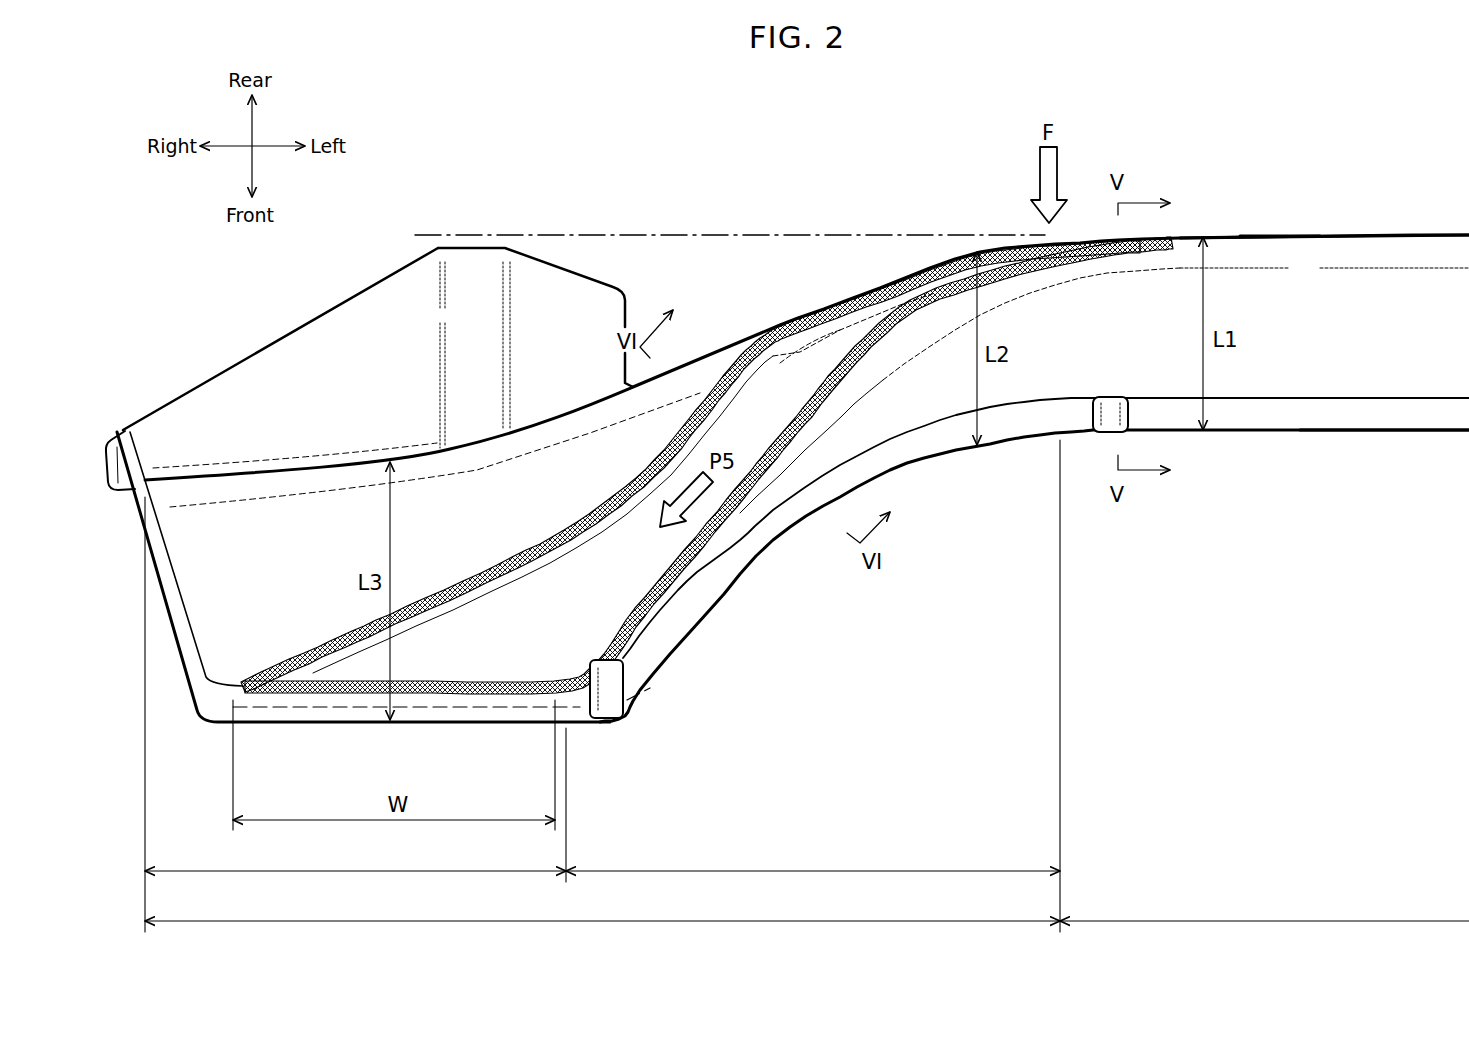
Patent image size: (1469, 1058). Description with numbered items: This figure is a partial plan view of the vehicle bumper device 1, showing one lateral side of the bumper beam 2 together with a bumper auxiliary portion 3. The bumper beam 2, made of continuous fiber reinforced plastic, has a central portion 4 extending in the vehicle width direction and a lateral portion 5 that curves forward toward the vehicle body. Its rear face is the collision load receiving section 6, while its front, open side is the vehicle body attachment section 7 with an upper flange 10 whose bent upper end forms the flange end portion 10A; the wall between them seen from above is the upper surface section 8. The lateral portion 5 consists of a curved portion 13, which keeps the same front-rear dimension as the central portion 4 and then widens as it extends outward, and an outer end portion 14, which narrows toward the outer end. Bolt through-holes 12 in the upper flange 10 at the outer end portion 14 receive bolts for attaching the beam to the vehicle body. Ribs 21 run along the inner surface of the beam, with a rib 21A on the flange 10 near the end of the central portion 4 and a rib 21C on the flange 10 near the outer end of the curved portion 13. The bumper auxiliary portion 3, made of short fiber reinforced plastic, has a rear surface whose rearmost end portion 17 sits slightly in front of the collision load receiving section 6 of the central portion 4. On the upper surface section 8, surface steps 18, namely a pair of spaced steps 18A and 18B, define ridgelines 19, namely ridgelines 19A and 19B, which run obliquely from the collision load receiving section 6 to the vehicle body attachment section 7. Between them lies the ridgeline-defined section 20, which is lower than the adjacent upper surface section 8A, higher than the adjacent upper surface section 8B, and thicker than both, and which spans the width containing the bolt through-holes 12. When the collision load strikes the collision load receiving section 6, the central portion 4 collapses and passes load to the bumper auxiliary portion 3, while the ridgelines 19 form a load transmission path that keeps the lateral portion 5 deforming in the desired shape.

The vehicle bumper device 1 is at (796, 190).
The bumper beam 2 is at (1330, 215).
The bumper auxiliary portion 3 is at (205, 355).
The central portion 4 is at (1264, 907).
The lateral portion 5 is at (602, 907).
The collision load receiving section 6 is at (1280, 232).
The vehicle body attachment section 7 is at (1235, 447).
The upper surface section 8 is at (1290, 337).
The upper surface section 8A is at (895, 410).
The upper surface section 8B is at (622, 462).
The flange 10 is at (1398, 433).
The flange end portion 10A is at (1343, 413).
The bolt through-hole 12 is at (350, 713).
The curved portion 13 is at (813, 858).
The outer end portion 14 is at (355, 858).
The rearmost end portion 17 is at (468, 246).
The surface step 18 is at (710, 464).
The step 18A is at (742, 514).
The step 18B is at (432, 583).
The ridgeline 19 is at (692, 467).
The ridgeline 19A is at (710, 550).
The ridgeline 19B is at (528, 540).
The ridgeline-defined section 20 is at (782, 405).
The rib 21 is at (877, 566).
The rib 21A is at (1110, 413).
The rib 21C is at (605, 703).